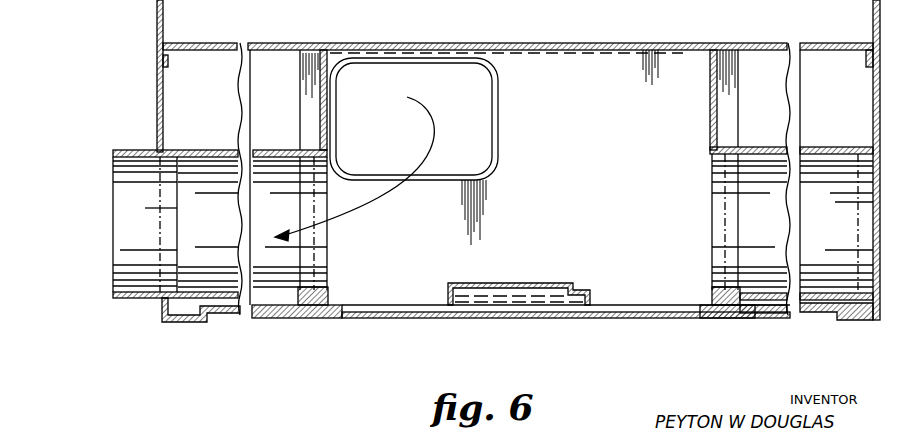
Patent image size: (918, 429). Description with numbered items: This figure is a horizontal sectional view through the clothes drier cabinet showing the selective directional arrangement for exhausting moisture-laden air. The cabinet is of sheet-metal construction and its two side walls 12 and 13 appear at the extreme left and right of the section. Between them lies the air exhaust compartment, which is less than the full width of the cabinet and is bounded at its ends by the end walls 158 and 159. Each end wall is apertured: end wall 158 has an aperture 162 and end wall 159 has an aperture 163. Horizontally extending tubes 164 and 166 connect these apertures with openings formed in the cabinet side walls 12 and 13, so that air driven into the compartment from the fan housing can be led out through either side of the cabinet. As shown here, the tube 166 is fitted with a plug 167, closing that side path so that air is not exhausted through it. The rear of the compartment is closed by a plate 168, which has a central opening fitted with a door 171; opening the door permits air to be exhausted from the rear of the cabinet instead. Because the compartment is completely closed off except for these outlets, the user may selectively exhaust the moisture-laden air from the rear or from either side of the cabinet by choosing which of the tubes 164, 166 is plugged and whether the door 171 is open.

The side wall 12 is at (873, 4).
The side wall 13 is at (163, 12).
The end wall 158 is at (312, 50).
The end wall 159 is at (710, 50).
The aperture 162 is at (333, 263).
The aperture 163 is at (716, 226).
The tube 164 is at (197, 130).
The tube 166 is at (812, 149).
The plug 167 is at (873, 218).
The plate 168 is at (353, 319).
The door 171 is at (518, 283).